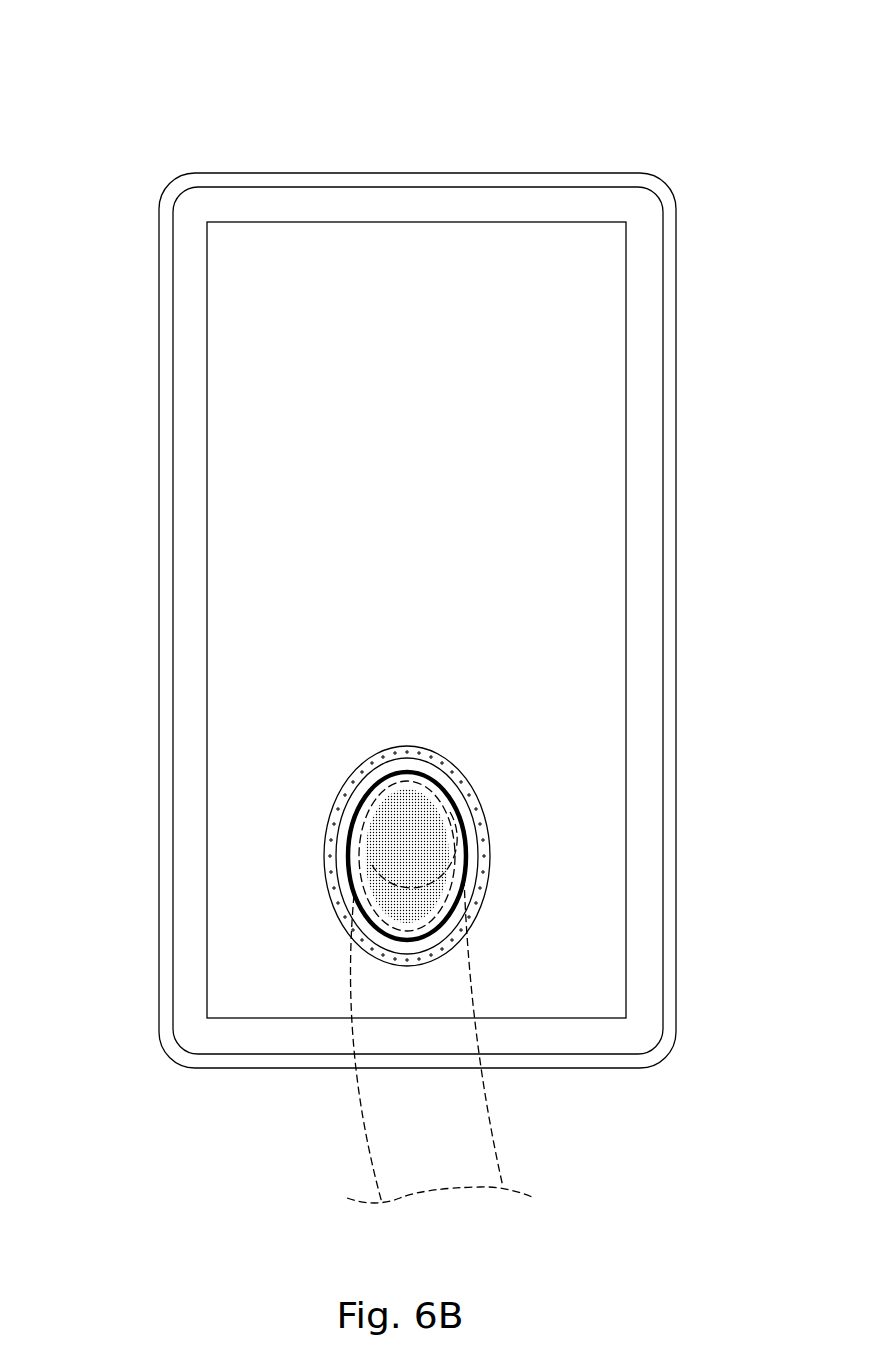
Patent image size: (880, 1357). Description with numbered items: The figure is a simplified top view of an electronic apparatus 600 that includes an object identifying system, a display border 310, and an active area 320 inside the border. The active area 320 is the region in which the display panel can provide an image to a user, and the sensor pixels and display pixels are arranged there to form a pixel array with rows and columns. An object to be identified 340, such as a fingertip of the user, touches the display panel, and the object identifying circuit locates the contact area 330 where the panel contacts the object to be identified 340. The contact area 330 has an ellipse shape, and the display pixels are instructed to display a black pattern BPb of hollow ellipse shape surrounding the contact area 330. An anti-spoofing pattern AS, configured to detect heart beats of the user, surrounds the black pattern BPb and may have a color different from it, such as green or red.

The electronic apparatus 600 is at (95, 33).
The display border 310 is at (507, 205).
The active area 320 is at (268, 221).
The contact area 330 is at (373, 903).
The object to be identified 340 is at (467, 1123).
The anti-spoofing pattern AS is at (470, 790).
The black pattern BPb is at (460, 832).